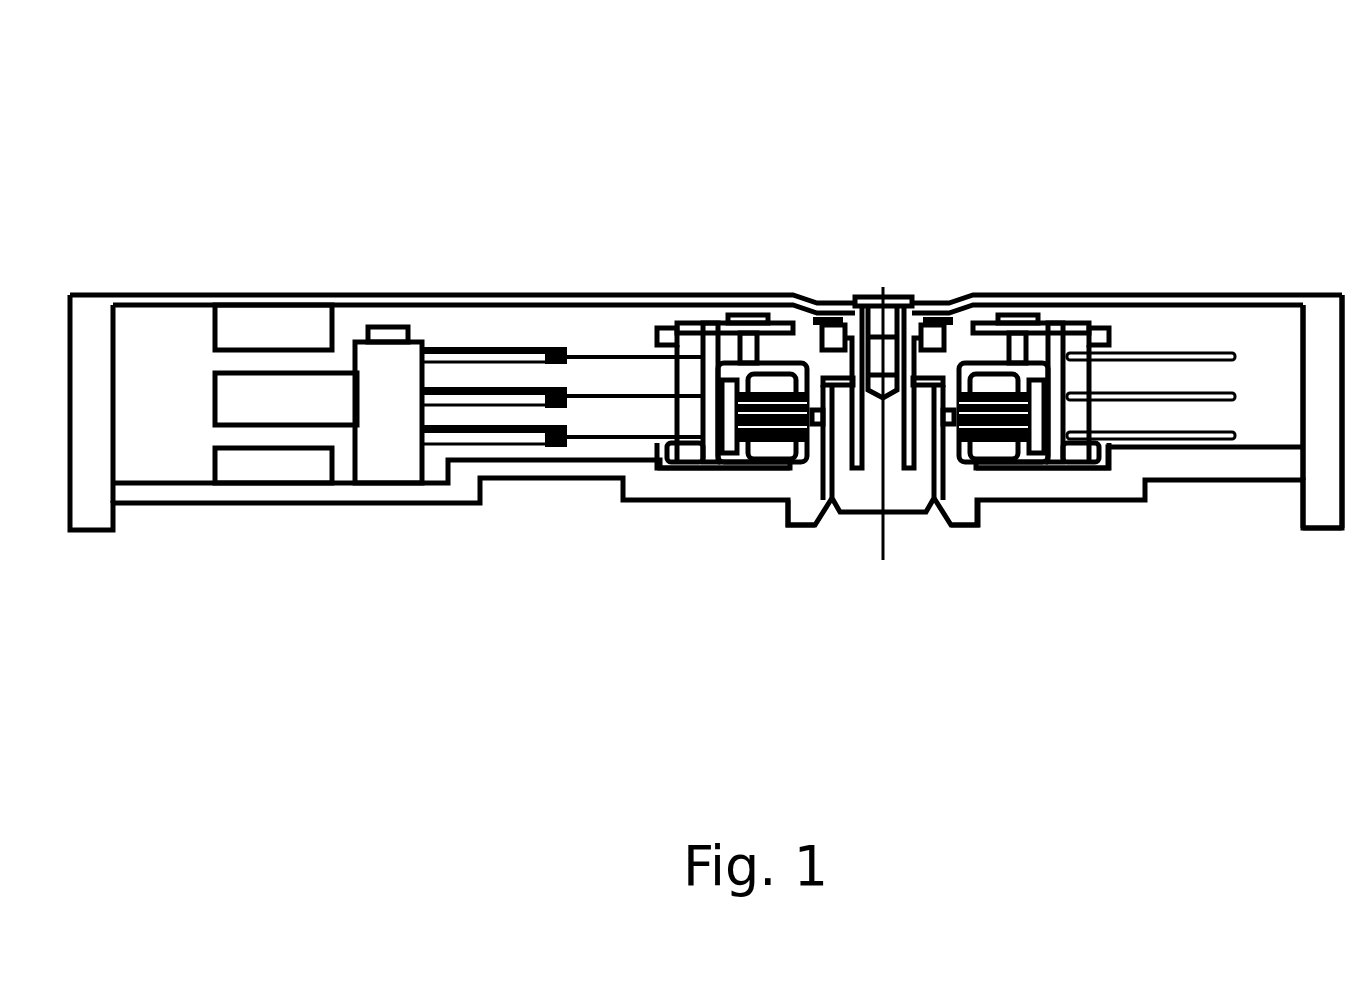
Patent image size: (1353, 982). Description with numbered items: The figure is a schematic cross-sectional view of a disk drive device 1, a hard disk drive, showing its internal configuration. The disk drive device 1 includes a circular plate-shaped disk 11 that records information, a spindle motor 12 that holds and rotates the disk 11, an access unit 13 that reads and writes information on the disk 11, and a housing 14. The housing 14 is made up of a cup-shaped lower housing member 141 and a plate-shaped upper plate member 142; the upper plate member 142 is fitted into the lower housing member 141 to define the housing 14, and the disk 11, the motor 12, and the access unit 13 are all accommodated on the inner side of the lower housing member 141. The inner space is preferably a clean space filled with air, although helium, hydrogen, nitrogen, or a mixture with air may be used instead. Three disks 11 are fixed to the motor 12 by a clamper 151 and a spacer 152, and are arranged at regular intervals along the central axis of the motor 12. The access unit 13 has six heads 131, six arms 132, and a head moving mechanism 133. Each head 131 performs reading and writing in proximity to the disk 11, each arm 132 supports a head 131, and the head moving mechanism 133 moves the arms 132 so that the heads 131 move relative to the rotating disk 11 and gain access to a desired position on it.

The disk drive device 1 is at (316, 85).
The disk 11 is at (1177, 433).
The spindle motor 12 is at (967, 350).
The access unit 13 is at (650, 159).
The head 131 is at (552, 350).
The arm 132 is at (455, 345).
The head moving mechanism 133 is at (387, 452).
The housing 14 is at (1140, 188).
The lower housing member 141 is at (1322, 538).
The upper plate member 142 is at (1058, 300).
The clamper 151 is at (708, 330).
The spacer 152 is at (703, 440).